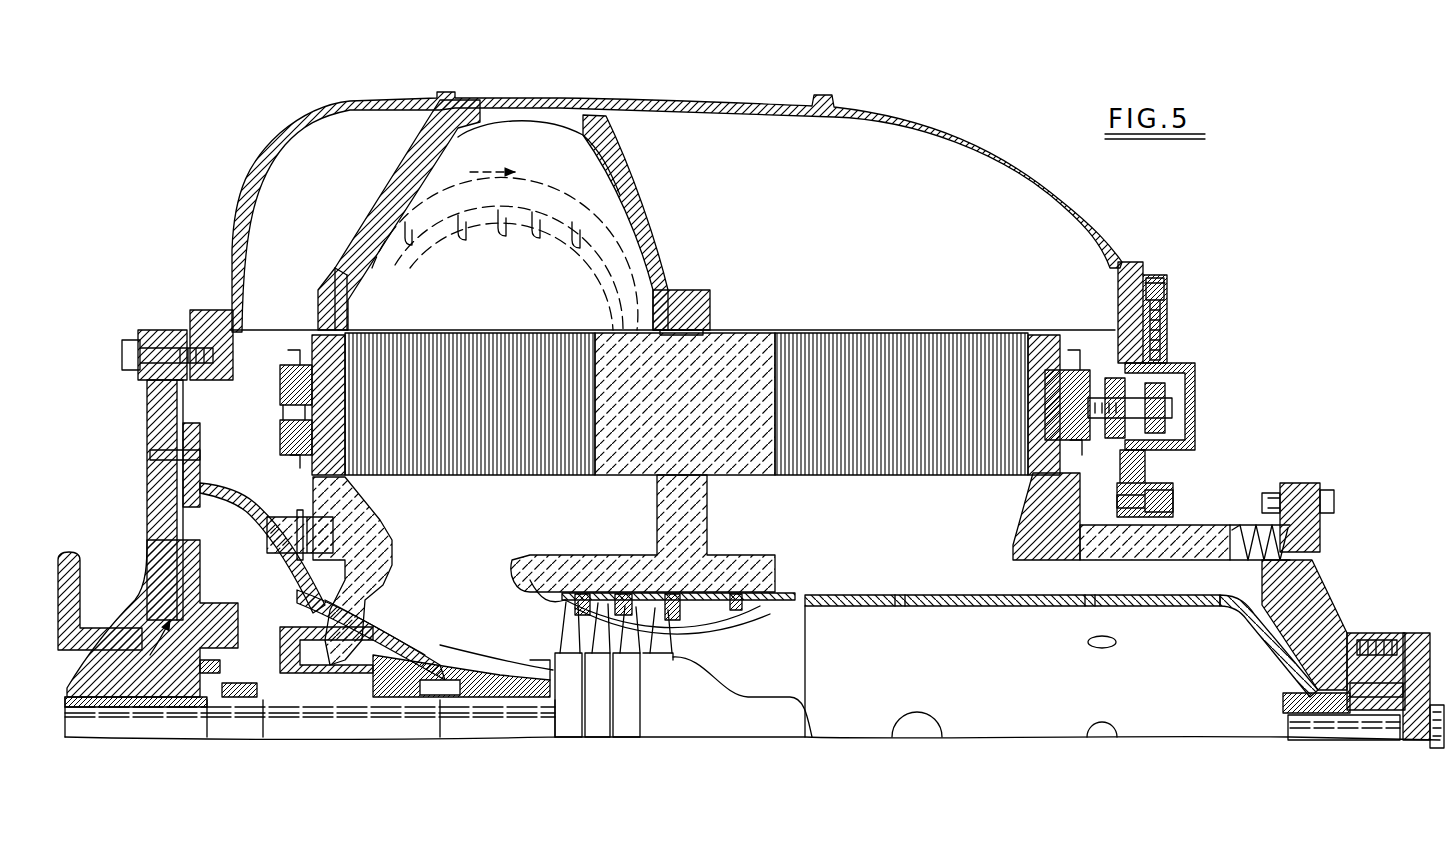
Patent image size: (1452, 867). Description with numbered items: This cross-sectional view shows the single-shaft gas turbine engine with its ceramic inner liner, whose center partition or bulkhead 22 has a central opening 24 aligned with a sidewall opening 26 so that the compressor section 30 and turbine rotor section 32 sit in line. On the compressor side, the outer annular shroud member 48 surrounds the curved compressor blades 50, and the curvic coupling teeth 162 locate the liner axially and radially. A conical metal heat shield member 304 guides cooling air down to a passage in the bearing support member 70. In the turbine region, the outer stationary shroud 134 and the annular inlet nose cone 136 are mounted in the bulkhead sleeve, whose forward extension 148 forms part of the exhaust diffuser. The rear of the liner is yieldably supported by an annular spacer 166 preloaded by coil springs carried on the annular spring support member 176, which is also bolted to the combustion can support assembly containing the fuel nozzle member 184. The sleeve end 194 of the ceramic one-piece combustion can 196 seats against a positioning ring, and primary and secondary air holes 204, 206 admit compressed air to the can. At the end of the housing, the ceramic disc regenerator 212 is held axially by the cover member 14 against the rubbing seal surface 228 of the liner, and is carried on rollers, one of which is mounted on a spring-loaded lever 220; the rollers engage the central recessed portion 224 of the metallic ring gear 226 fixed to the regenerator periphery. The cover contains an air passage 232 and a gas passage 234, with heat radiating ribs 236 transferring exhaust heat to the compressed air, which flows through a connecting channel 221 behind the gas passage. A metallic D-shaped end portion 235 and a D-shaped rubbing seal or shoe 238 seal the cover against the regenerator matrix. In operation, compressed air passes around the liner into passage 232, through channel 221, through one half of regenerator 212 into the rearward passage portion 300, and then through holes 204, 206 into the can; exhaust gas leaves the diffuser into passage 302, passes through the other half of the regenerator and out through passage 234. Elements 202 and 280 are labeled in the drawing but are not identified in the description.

The cover member 14 is at (950, 143).
The center partition or bulkhead 22 is at (698, 528).
The central opening 24 is at (891, 628).
The sidewall opening 26 is at (1035, 565).
The compressor section 30 is at (412, 617).
The turbine rotor section 32 is at (790, 650).
The outer annular shroud member 48 is at (108, 622).
The compressor blades 50 is at (110, 670).
The bearing support member 70 is at (355, 676).
The outer stationary shroud 134 is at (735, 618).
The annular inlet nose cone 136 is at (722, 700).
The forward extension of sleeve 148 is at (545, 600).
The curvic coupling teeth 162 is at (302, 517).
The annular spacer 166 is at (1125, 553).
The annular spring support member 176 is at (1222, 525).
The fuel nozzle member 184 is at (1435, 740).
The sleeve end of combustion can 194 is at (1303, 703).
The ceramic one-piece combustion can 196 is at (1228, 603).
The partition wall 202 is at (808, 598).
The primary air holes 204 is at (1082, 608).
The secondary air holes 206 is at (925, 598).
The regenerator 212 is at (925, 352).
The lever 220 is at (858, 285).
The connecting channel 221 is at (560, 165).
The central recessed portion 224 is at (1095, 425).
The metallic ring gear 226 is at (1100, 362).
The rubbing seal surface 228 is at (708, 462).
The air passage 232 is at (340, 218).
The gas passage 234 is at (514, 300).
The D-shaped end portion 235 is at (700, 298).
The heat radiating ribs 236 is at (505, 251).
The rubbing seal or shoe 238 is at (720, 338).
The end ring 280 is at (370, 570).
The rearward passage portion 300 is at (902, 573).
The exhaust passage 302 is at (448, 550).
The conical metal heat shield member 304 is at (425, 690).